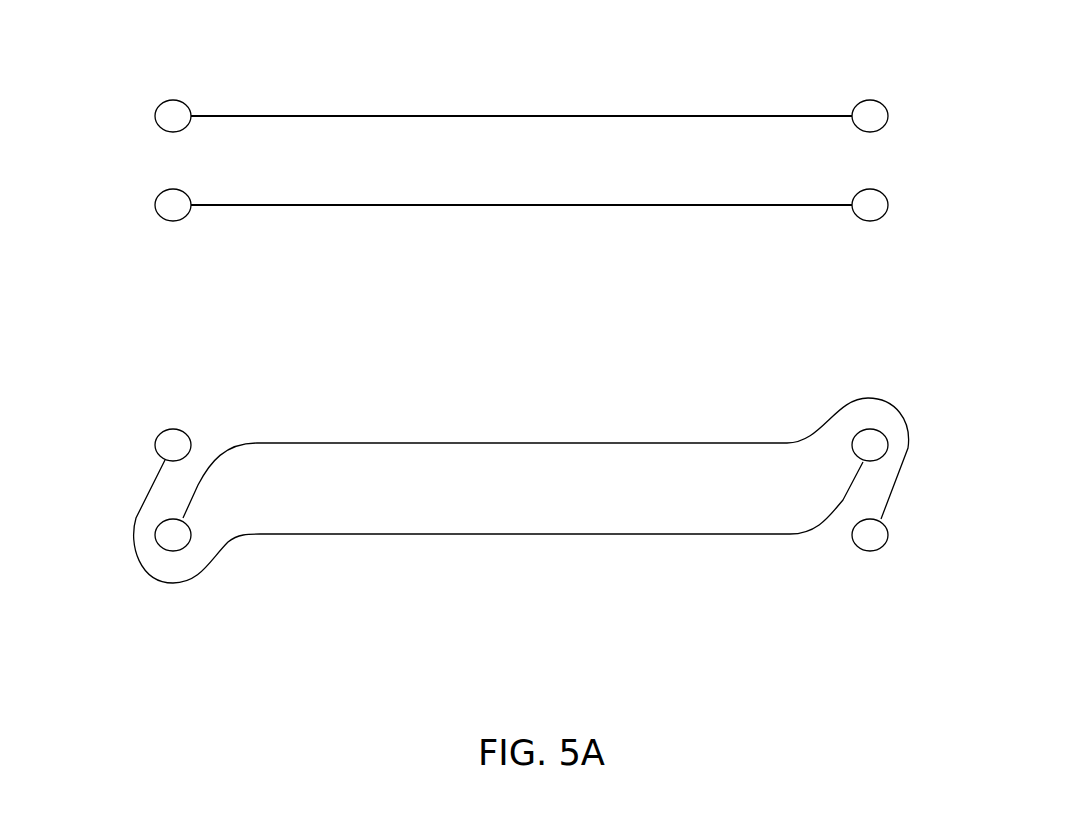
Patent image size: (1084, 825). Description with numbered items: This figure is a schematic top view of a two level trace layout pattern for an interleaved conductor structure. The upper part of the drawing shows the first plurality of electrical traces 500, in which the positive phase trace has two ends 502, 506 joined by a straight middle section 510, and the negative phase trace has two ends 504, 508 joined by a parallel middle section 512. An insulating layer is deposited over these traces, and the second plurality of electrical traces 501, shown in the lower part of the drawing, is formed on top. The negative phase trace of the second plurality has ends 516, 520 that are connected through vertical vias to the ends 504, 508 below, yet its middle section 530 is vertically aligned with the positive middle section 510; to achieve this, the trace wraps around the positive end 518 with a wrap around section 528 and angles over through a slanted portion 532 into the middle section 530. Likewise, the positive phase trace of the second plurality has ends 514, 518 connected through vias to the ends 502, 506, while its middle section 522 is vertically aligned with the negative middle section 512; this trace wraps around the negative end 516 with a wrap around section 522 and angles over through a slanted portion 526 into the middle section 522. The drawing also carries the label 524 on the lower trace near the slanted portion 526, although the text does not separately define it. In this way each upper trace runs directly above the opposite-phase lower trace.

The first plurality of electrical traces 500 is at (494, 72).
The second plurality of electrical traces 501 is at (438, 425).
The end of positive phase trace 502 is at (183, 129).
The end of negative phase trace 504 is at (183, 218).
The end of positive phase trace 506 is at (859, 128).
The end of negative phase trace 508 is at (859, 217).
The middle section 510 is at (508, 117).
The middle section 512 is at (508, 206).
The end of positive phase trace 514 is at (160, 433).
The end of negative phase trace 516 is at (156, 533).
The end of positive phase trace 518 is at (853, 454).
The end of negative phase trace 520 is at (858, 551).
The middle section 522 is at (150, 490).
The wire segment 524 is at (663, 533).
The slanted portion 526 is at (843, 500).
The wrap around section 528 is at (843, 410).
The middle section 530 is at (508, 444).
The slanted portion 532 is at (197, 492).